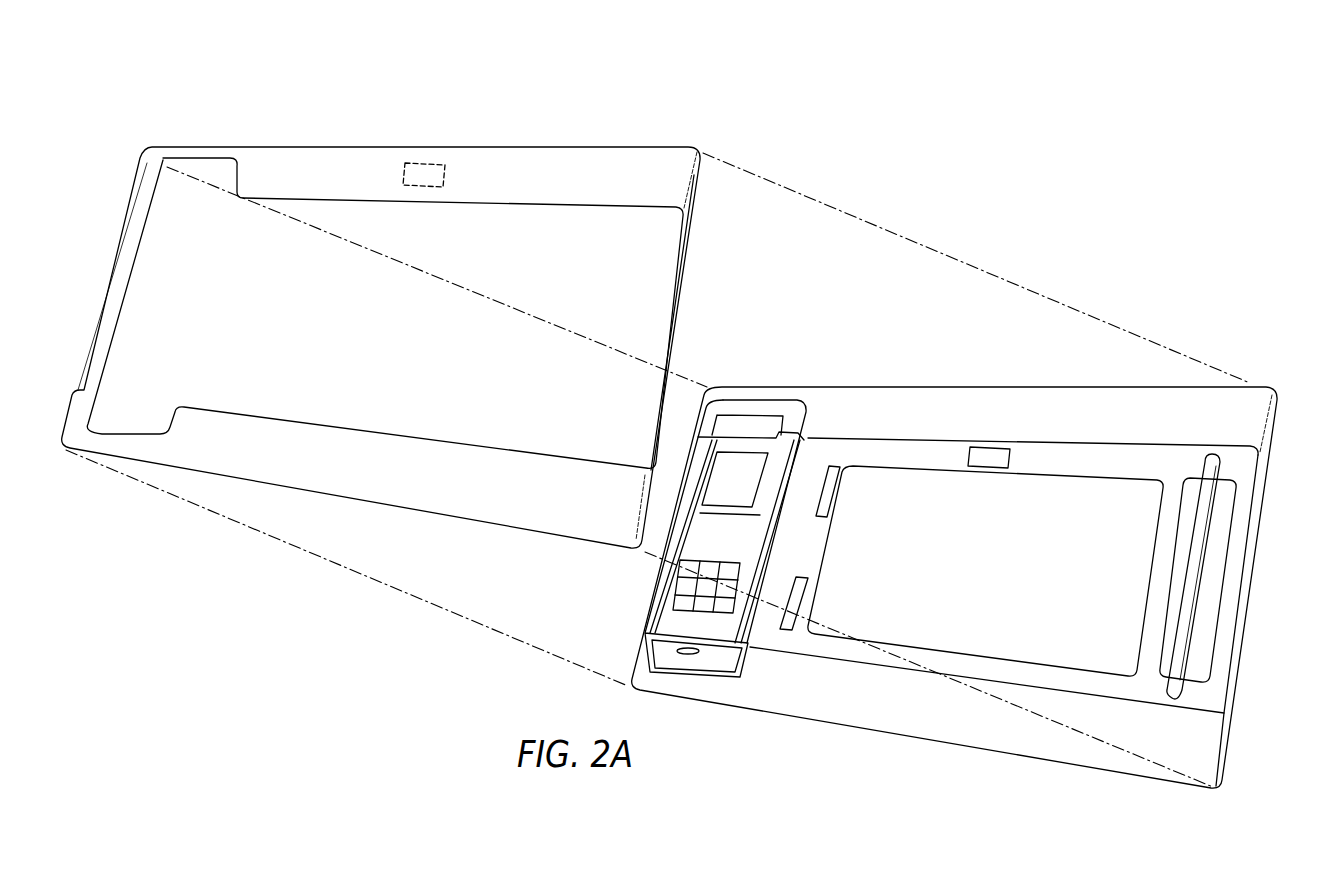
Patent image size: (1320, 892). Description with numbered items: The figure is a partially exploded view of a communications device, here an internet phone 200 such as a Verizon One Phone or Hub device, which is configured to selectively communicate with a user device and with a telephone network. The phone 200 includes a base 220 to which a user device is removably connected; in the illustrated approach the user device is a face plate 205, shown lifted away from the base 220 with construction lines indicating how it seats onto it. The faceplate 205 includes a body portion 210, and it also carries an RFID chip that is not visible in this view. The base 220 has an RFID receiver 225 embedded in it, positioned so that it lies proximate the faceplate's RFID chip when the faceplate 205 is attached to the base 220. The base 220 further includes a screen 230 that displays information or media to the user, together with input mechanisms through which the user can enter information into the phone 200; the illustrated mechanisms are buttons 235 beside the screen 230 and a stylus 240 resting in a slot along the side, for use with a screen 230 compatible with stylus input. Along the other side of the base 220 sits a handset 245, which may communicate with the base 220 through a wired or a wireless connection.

The internet phone 200 is at (1231, 340).
The face plate 205 is at (147, 127).
The body portion 210 is at (404, 145).
The base 220 is at (1003, 386).
The RFID receiver 225 is at (963, 457).
The screen 230 is at (1082, 473).
The buttons 235 is at (836, 508).
The stylus 240 is at (1185, 652).
The handset 245 is at (652, 569).